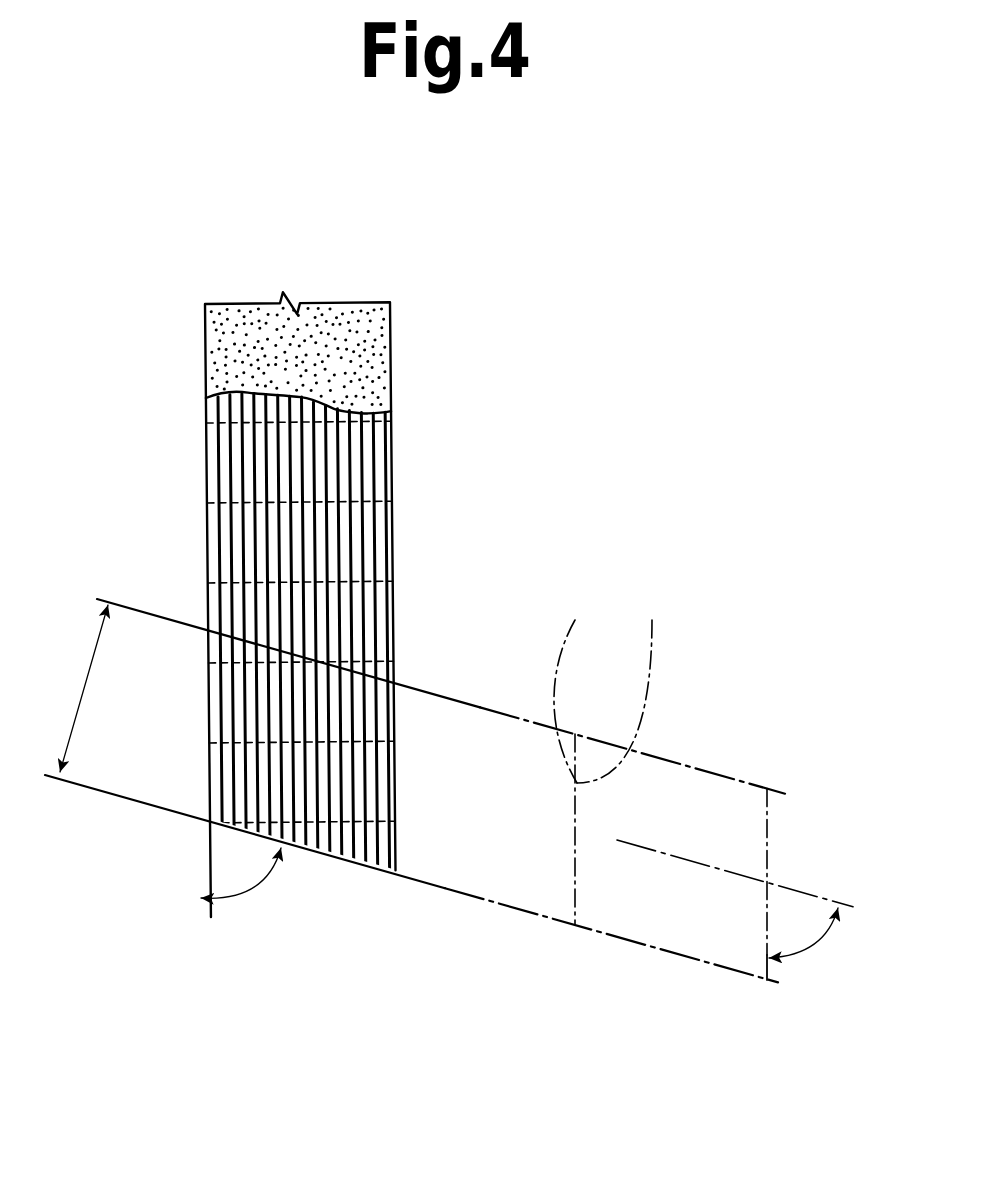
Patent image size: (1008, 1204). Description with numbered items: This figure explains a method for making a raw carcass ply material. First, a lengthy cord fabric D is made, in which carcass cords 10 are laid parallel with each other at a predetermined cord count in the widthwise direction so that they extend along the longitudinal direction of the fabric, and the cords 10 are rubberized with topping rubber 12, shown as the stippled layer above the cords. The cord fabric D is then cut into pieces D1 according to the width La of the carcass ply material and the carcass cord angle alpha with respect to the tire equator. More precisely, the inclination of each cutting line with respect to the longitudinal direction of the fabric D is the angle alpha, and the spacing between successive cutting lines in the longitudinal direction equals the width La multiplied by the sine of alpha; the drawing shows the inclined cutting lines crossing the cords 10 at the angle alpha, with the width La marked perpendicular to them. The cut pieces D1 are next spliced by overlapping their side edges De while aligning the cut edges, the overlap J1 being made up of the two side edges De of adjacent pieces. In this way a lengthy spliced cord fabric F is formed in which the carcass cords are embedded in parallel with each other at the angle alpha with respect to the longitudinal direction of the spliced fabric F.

The carcass cords 10 is at (215, 443).
The topping rubber 12 is at (380, 347).
The cord fabric D is at (540, 322).
The spliced cord fabric F is at (735, 745).
The overlap of side edges J1 is at (392, 676).
The side edges De is at (617, 682).
The width of the carcass ply material La is at (84, 688).
The cut pieces D1 is at (328, 856).
The carcass cord angle alpha is at (519, 915).